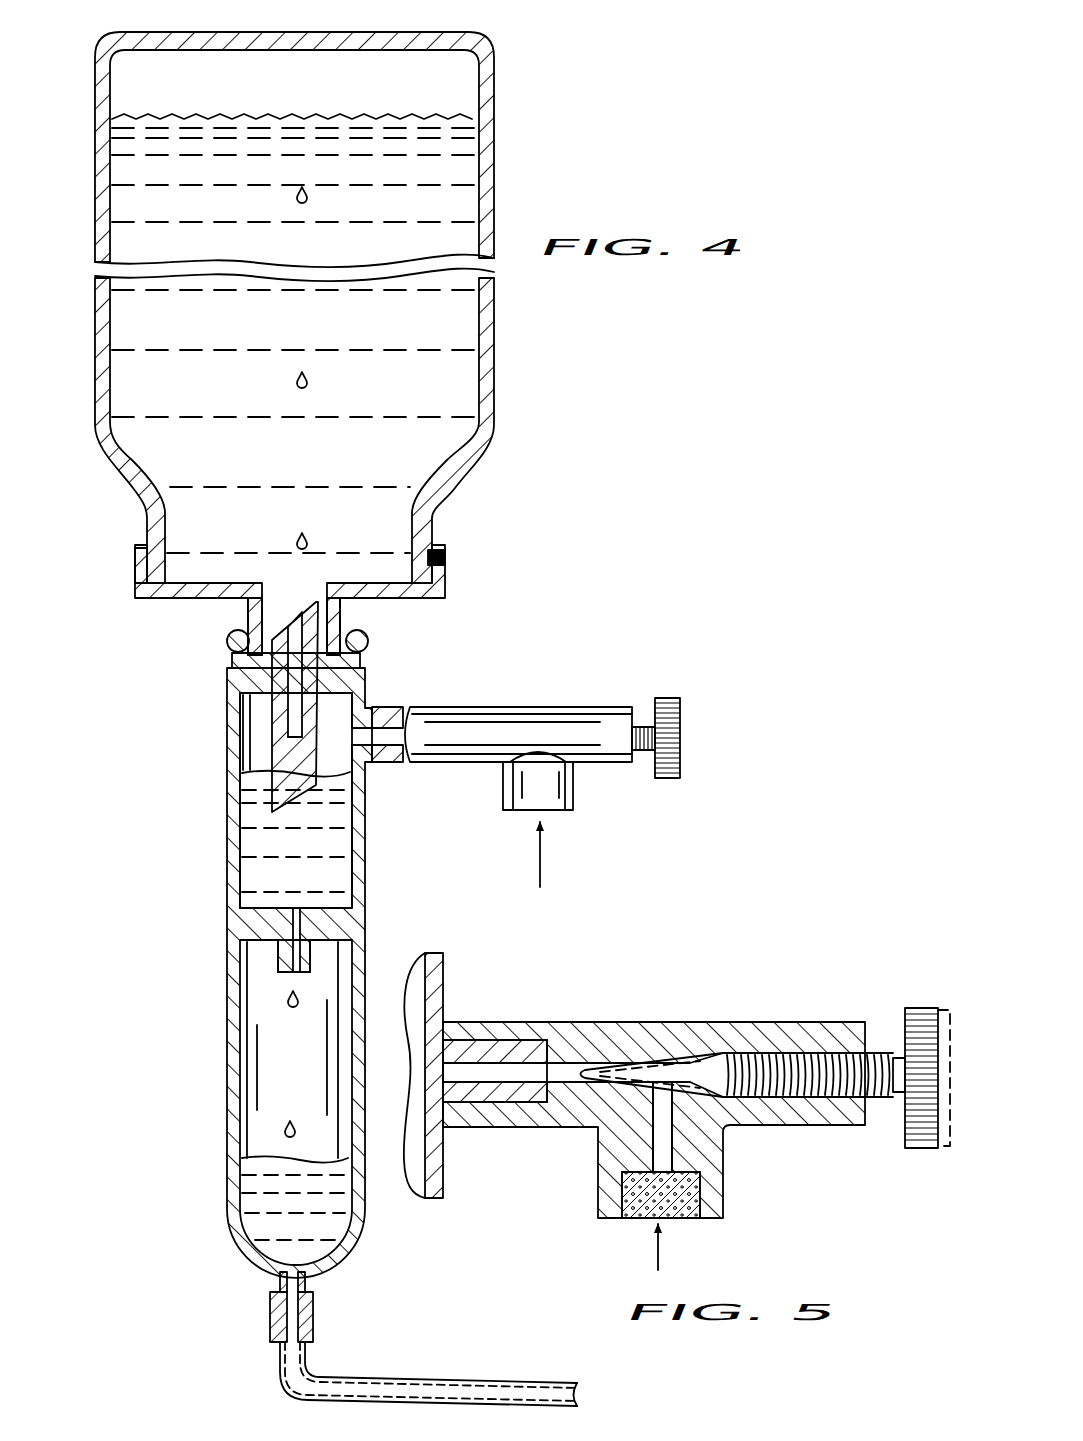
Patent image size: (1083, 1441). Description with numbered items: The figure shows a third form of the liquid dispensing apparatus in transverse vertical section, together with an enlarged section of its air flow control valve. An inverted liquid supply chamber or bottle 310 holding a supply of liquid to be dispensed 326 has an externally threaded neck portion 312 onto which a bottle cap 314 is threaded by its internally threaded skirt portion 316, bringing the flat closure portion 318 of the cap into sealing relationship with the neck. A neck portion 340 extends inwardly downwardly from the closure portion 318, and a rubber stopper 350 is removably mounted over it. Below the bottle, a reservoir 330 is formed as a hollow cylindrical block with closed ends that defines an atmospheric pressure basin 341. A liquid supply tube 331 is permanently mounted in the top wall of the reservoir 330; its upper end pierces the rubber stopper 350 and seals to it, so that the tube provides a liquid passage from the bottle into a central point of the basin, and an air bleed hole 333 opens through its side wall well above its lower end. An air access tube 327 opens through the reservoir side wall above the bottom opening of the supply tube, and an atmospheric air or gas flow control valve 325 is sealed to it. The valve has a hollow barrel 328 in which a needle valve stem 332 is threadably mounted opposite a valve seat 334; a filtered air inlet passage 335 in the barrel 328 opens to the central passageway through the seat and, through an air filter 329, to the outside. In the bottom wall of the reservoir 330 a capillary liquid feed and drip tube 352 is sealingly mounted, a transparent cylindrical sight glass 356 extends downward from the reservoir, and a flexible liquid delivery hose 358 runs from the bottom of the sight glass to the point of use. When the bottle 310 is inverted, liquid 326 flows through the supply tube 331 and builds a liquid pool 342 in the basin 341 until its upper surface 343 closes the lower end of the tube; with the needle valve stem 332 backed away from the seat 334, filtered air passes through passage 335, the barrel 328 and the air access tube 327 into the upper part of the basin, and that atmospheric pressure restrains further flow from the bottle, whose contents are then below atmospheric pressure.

In FIG. 4, the liquid supply chamber or bottle 310 is at (490, 130).
In FIG. 4, the liquid to be dispensed 326 is at (460, 420).
In FIG. 4, the neck portion 312 is at (447, 565).
In FIG. 4, the chamber cap or bottle cap 314 is at (137, 598).
In FIG. 4, the internally threaded skirt portion 316 is at (133, 565).
In FIG. 4, the flat closure portion 318 is at (203, 601).
In FIG. 4, the neck portion of the cap 340 is at (347, 613).
In FIG. 4, the rubber stopper 350 is at (228, 648).
In FIG. 4, the reservoir 330 is at (228, 868).
In FIG. 5, the reservoir 330 is at (445, 985).
In FIG. 4, the liquid supply tube 331 is at (272, 713).
In FIG. 4, the air bleed hole 333 is at (323, 757).
In FIG. 4, the atmospheric pressure basin 341 is at (335, 765).
In FIG. 4, the liquid pool 342 is at (327, 860).
In FIG. 4, the upper surface of the liquid pool 343 is at (272, 762).
In FIG. 4, the capillary liquid feed and drip tube 352 is at (282, 958).
In FIG. 4, the transparent cylindrical sight glass 356 is at (270, 1063).
In FIG. 4, the flexible deformable liquid delivery hose 358 is at (440, 1378).
In FIG. 4, the atmospheric air or gas flow control valve 325 is at (572, 757).
In FIG. 5, the atmospheric air or gas flow control valve 325 is at (696, 1104).
In FIG. 4, the air access tube 327 is at (420, 706).
In FIG. 5, the air access tube 327 is at (485, 1095).
In FIG. 4, the hollow barrel 328 is at (480, 733).
In FIG. 5, the hollow barrel 328 is at (482, 1020).
In FIG. 4, the needle valve stem 332 is at (682, 740).
In FIG. 5, the needle valve stem 332 is at (712, 1066).
In FIG. 5, the valve seat 334 is at (655, 1064).
In FIG. 5, the filtered air inlet passage 335 is at (660, 1130).
In FIG. 5, the air filter 329 is at (645, 1215).